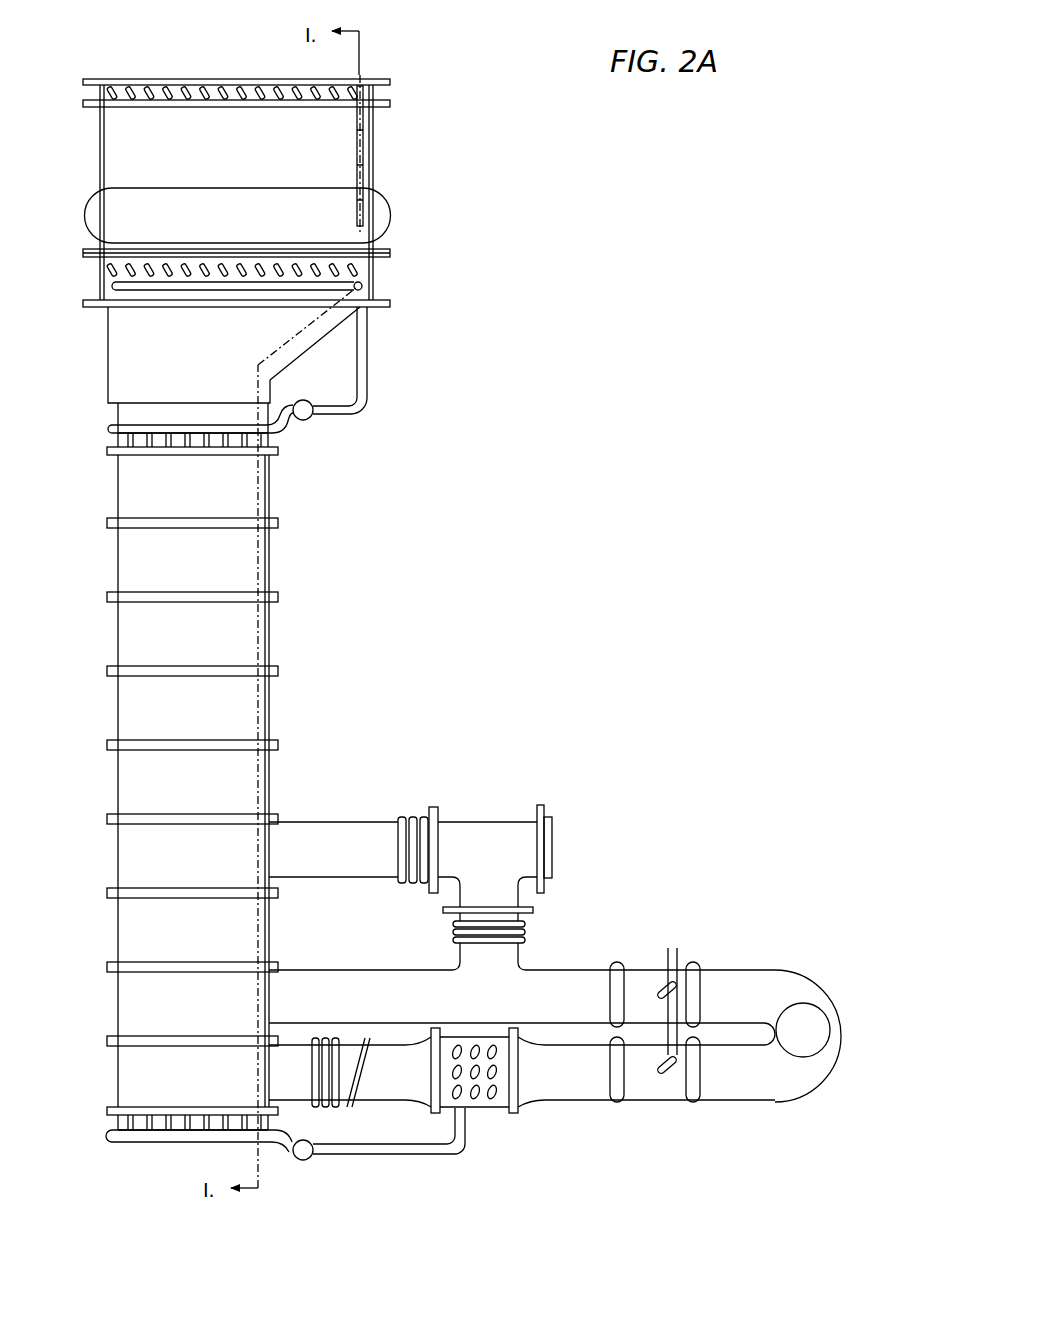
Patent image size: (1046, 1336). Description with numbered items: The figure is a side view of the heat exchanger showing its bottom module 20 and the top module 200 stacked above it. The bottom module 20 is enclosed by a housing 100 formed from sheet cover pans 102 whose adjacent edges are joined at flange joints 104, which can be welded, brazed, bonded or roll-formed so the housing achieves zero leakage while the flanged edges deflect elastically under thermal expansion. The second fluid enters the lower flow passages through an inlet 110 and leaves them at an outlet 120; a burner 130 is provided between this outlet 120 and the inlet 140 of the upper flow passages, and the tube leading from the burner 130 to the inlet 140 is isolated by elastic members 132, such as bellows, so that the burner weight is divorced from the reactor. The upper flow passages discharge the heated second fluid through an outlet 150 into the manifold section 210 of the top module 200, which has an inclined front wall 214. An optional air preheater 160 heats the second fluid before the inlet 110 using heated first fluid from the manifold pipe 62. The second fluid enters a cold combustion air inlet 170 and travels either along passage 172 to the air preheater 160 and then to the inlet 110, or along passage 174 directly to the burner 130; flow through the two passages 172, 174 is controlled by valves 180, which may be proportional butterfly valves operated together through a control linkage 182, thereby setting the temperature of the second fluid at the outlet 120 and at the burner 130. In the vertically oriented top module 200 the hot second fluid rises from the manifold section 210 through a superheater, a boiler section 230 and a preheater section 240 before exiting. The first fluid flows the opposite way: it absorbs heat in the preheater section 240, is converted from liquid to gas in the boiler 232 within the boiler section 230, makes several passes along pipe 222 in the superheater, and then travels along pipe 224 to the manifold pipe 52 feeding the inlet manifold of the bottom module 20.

The bottom module 20 is at (889, 415).
The manifold pipe 52 is at (308, 418).
The manifold pipe 62 is at (305, 1160).
The housing 100 is at (287, 630).
The cover pans 102 is at (225, 560).
The flange joints 104 is at (278, 523).
The inlet 110 is at (268, 1080).
The outlet 120 is at (271, 1000).
The burner 130 is at (485, 830).
The elastic members 132 is at (404, 815).
The inlet 140 is at (270, 832).
The outlet 150 is at (118, 410).
The air preheater 160 is at (486, 1116).
The cold combustion air inlet 170 is at (814, 1042).
The passage 172 is at (745, 1078).
The passage 174 is at (788, 990).
The valves 180 is at (657, 1110).
The control linkage 182 is at (710, 917).
The top module 200 is at (430, 83).
The manifold section 210 is at (108, 355).
The inclined front wall 214 is at (300, 357).
The pipe 222 is at (100, 276).
The pipe 224 is at (358, 377).
The boiler section 230 is at (100, 161).
The boiler 232 is at (87, 216).
The preheater section 240 is at (100, 95).